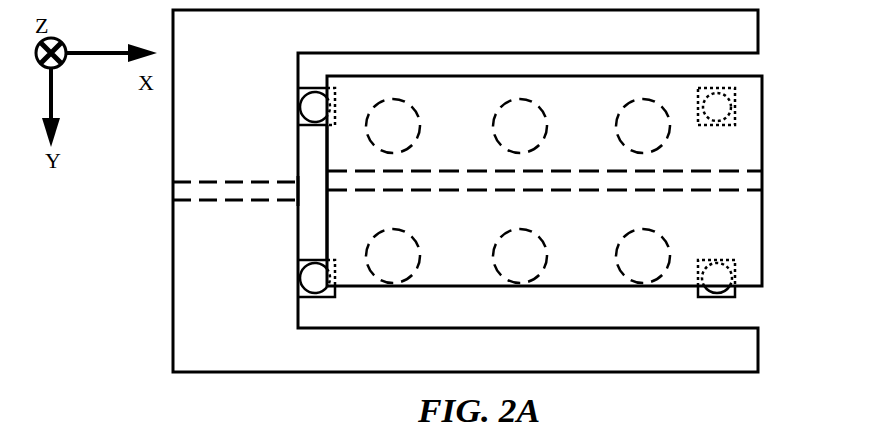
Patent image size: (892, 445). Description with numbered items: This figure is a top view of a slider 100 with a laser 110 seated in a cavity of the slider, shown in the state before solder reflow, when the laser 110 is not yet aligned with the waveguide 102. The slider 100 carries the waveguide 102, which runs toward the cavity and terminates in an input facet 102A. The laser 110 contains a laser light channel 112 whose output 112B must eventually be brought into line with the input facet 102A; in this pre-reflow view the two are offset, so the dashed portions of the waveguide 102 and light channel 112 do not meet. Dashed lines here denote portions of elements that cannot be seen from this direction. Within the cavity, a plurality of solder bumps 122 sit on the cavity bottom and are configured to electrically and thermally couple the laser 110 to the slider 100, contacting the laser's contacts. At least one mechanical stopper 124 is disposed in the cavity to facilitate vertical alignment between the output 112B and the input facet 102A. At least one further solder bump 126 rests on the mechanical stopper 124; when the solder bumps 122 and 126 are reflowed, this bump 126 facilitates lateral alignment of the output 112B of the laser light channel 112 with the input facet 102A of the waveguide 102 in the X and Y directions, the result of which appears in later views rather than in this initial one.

The slider 100 is at (218, 270).
The waveguide 102 is at (195, 192).
The input facet of the waveguide 102A is at (298, 192).
The laser 110 is at (725, 135).
The laser light channel 112 is at (737, 183).
The output of the laser light channel 112B is at (328, 182).
The solder bumps 122 is at (520, 257).
The mechanical stopper 124 is at (733, 295).
The solder bump on the mechanical stopper 126 is at (715, 278).